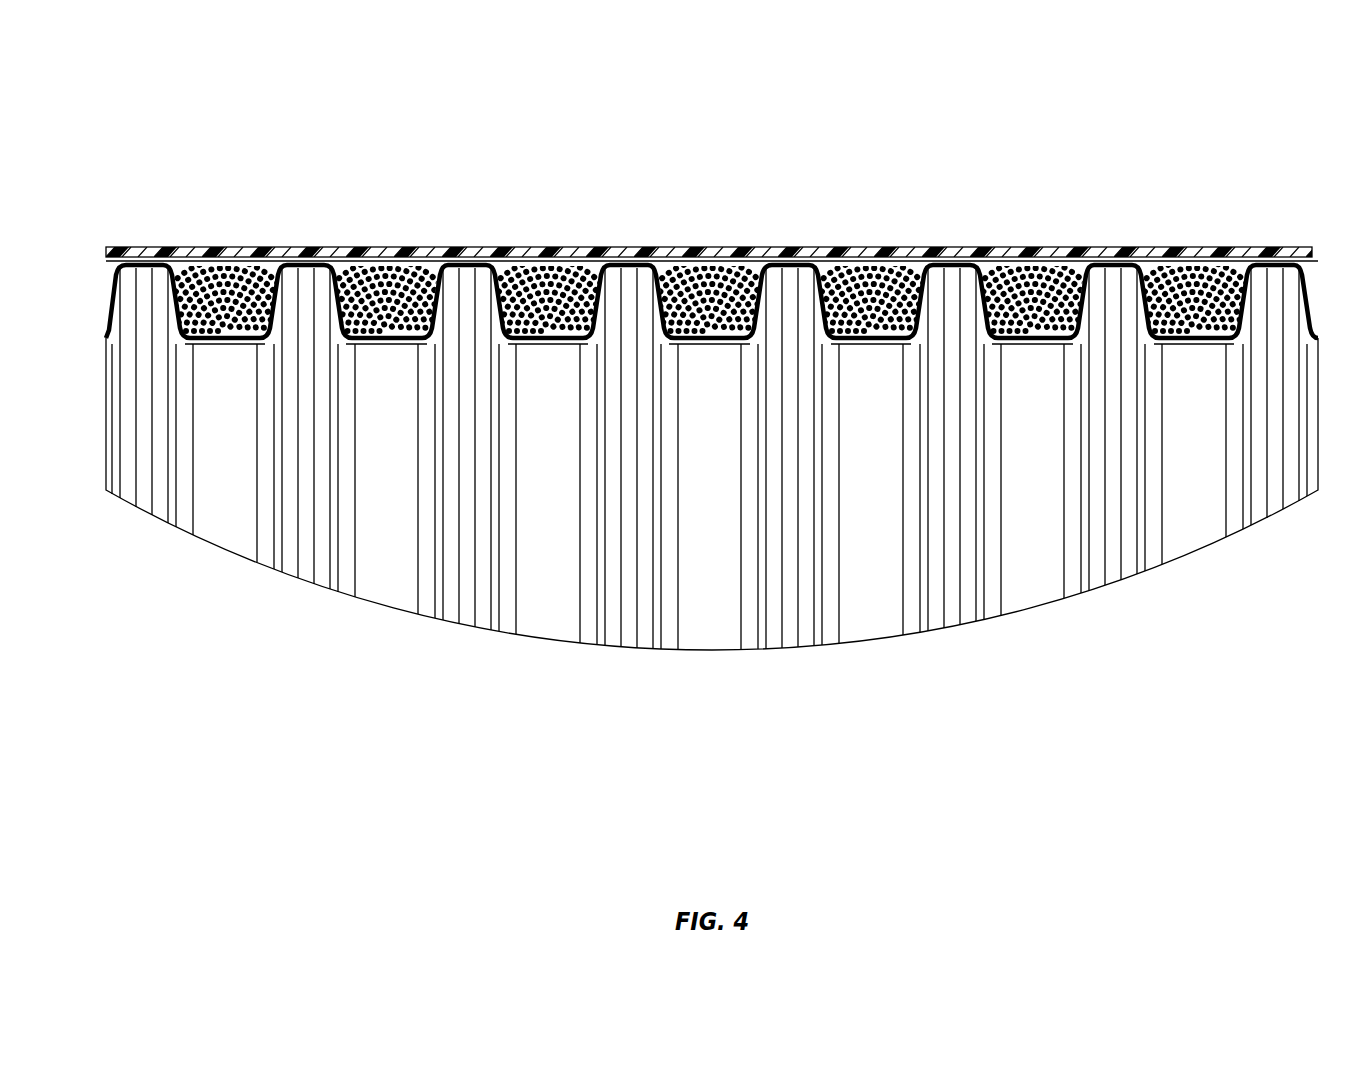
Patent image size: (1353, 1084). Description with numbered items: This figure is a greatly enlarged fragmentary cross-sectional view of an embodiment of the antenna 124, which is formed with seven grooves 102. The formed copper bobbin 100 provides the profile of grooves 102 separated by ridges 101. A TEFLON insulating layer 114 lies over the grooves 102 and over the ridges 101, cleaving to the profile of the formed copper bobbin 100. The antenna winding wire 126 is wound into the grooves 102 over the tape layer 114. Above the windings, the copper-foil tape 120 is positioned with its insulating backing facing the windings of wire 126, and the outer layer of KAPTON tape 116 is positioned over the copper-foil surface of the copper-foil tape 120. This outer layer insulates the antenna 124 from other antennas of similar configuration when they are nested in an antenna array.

The copper bobbin 100 is at (383, 612).
The ridge 101 is at (787, 310).
The groove 102 is at (438, 303).
The insulating layer 114 is at (628, 310).
The KAPTON tape 116 is at (138, 247).
The copper-foil tape 120 is at (283, 247).
The antenna 124 is at (890, 116).
The antenna winding wire 126 is at (546, 268).